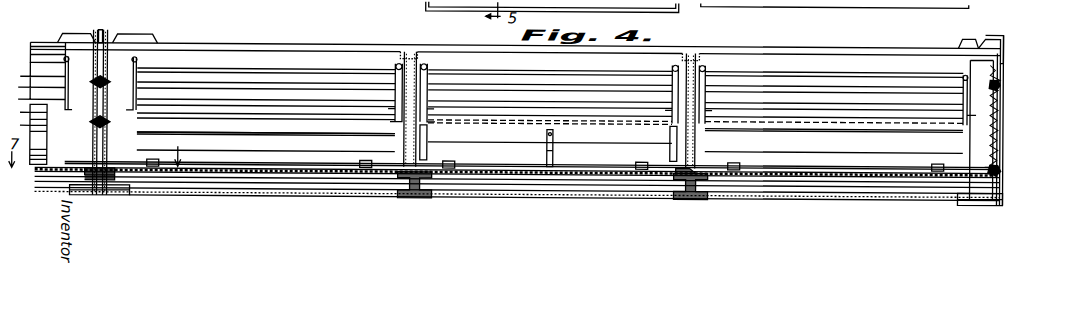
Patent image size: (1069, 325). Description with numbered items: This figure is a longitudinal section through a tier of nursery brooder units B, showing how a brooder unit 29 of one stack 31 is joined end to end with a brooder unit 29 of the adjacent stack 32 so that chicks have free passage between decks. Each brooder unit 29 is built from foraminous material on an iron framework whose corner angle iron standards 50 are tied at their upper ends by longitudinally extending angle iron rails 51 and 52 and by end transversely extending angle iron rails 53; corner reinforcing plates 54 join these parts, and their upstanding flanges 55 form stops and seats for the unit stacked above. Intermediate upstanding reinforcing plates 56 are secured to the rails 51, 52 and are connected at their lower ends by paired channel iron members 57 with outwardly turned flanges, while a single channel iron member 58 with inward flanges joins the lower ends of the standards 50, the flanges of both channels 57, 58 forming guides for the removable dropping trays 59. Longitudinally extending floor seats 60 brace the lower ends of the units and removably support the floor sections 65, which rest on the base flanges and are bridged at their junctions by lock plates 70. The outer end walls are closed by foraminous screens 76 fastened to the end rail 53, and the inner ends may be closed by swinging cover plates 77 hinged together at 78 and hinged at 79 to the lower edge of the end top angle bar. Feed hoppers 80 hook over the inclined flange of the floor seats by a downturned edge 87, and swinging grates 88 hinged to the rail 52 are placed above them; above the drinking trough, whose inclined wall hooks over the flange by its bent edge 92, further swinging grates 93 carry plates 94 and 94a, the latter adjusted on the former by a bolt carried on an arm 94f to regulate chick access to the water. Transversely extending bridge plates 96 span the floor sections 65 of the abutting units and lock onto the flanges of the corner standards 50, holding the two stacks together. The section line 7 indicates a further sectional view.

The section line 7 is at (178, 147).
The brooder unit 29 is at (828, 68).
The stack of brooder units 31 is at (48, 43).
The stack of brooder units 32 is at (362, 43).
The corner angle iron standard 50 is at (148, 42).
The longitudinally extending angle iron rail 51 is at (406, 50).
The longitudinally extending angle iron rail 52 is at (792, 49).
The end transversely extending angle iron rail 53 is at (100, 43).
The corner reinforcing plate 54 is at (130, 36).
The upstanding side and end flange 55 is at (78, 36).
The upstanding reinforcing plate 56 is at (418, 68).
The transversely extending channel iron member 57 is at (415, 197).
The transversely extending channel iron member 58 is at (112, 195).
The removable dropping tray 59 is at (240, 190).
The longitudinally extending metal floor seat 60 is at (219, 178).
The floor section 65 is at (298, 170).
The reinforcing and lock plate 70 is at (678, 172).
The foraminous screen 76 is at (992, 110).
The swinging door or cover plate 77 is at (107, 136).
The hinge connection 78 is at (108, 80).
The hinge connection 79 is at (112, 80).
The feed hopper 80 is at (216, 135).
The down turned forward edge 87 is at (153, 158).
The swinging grate 88 is at (228, 72).
The bent forward edge 92 is at (455, 159).
The swinging grate 93 is at (612, 99).
The plate 94 is at (565, 137).
The plate 94a is at (546, 147).
The arm 94f is at (553, 149).
The bridge plate 96 is at (95, 182).
The nursery brooder unit B is at (1000, 163).